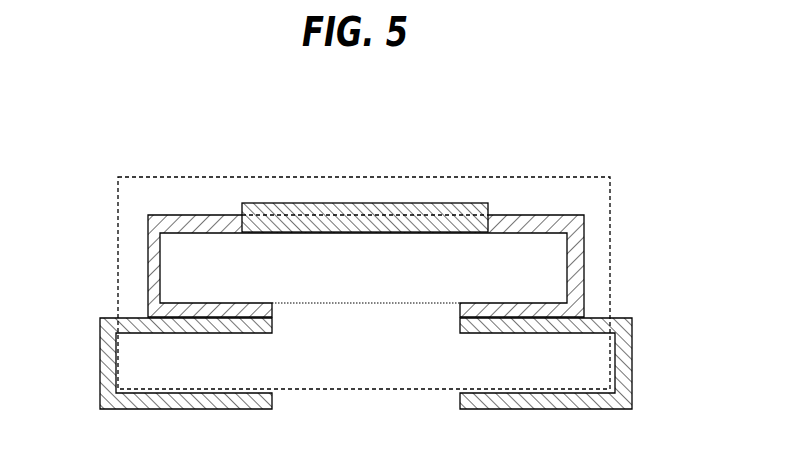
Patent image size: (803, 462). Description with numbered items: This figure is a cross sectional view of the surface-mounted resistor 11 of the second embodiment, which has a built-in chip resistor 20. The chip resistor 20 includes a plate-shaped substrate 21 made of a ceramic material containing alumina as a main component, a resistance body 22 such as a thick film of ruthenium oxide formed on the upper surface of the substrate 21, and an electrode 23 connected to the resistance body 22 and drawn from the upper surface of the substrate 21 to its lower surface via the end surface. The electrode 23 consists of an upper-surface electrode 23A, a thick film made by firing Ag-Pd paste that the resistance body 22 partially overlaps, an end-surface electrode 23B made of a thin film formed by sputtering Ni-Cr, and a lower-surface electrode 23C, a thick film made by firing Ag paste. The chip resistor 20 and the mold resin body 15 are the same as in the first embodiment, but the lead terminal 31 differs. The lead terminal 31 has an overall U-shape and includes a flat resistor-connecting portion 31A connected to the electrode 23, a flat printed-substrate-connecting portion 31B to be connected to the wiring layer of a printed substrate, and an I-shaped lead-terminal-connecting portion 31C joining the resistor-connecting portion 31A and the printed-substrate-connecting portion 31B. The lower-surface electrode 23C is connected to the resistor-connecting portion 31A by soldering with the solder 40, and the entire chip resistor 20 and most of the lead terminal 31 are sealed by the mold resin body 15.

The surface-mounted resistor 11 is at (647, 174).
The mold resin body 15 is at (237, 177).
The chip resistor 20 is at (539, 192).
The substrate 21 is at (403, 303).
The resistance body 22 is at (376, 203).
The electrode 23 is at (366, 266).
The upper-surface electrode 23A is at (233, 234).
The end-surface electrode 23B is at (162, 267).
The lower-surface electrode 23C is at (245, 303).
The lead terminal 31 is at (370, 363).
The resistor-connecting portion 31A is at (237, 333).
The printed-substrate-connecting portion 31B is at (184, 393).
The lead-terminal-connecting portion 31C is at (100, 362).
The solder 40 is at (339, 319).